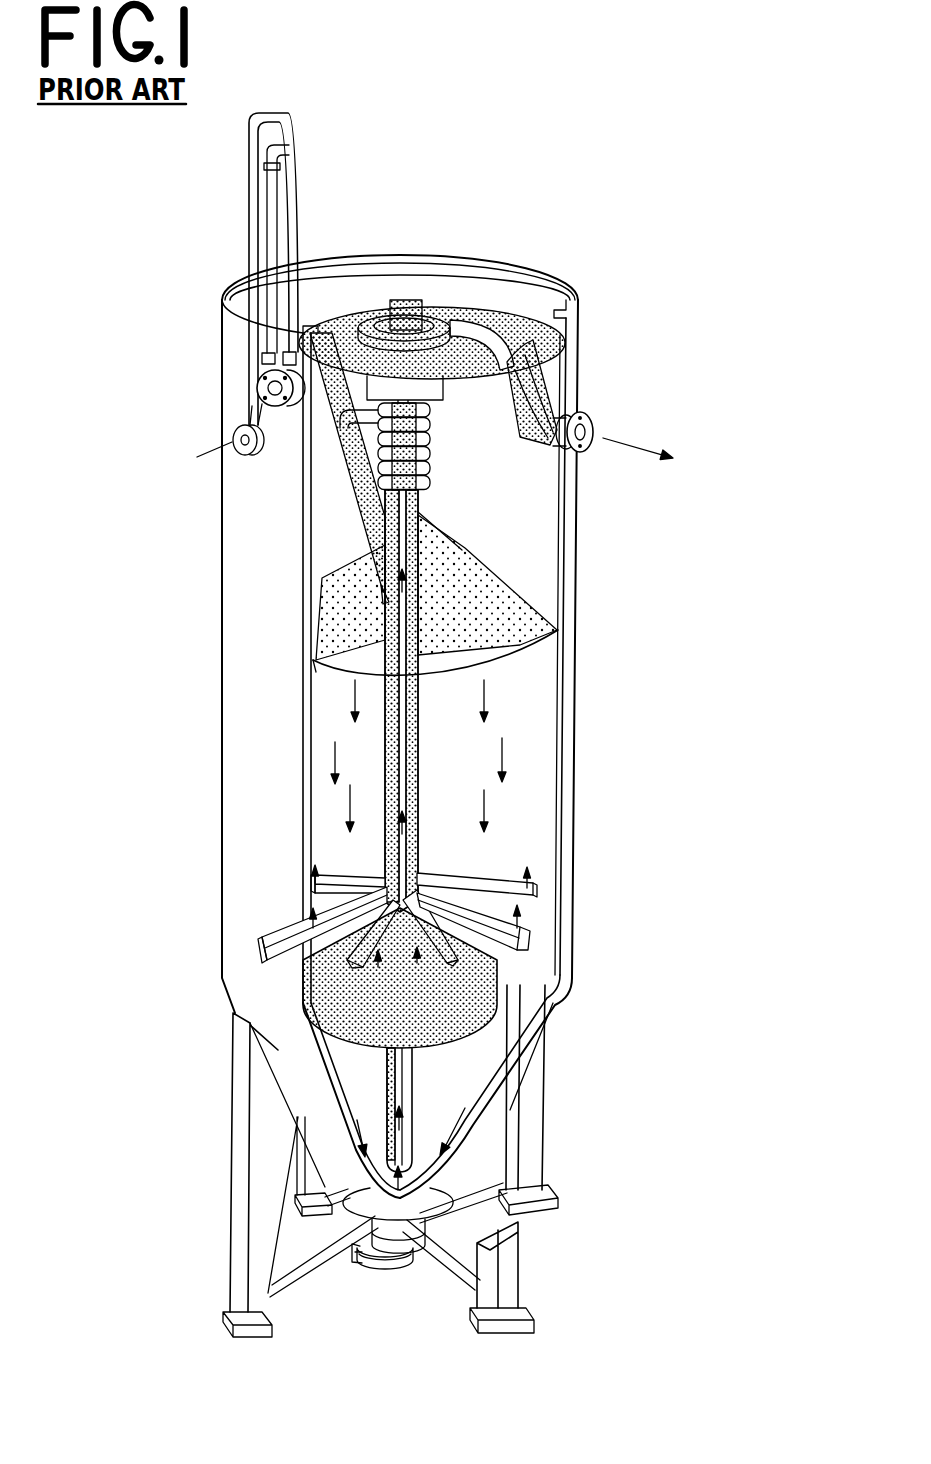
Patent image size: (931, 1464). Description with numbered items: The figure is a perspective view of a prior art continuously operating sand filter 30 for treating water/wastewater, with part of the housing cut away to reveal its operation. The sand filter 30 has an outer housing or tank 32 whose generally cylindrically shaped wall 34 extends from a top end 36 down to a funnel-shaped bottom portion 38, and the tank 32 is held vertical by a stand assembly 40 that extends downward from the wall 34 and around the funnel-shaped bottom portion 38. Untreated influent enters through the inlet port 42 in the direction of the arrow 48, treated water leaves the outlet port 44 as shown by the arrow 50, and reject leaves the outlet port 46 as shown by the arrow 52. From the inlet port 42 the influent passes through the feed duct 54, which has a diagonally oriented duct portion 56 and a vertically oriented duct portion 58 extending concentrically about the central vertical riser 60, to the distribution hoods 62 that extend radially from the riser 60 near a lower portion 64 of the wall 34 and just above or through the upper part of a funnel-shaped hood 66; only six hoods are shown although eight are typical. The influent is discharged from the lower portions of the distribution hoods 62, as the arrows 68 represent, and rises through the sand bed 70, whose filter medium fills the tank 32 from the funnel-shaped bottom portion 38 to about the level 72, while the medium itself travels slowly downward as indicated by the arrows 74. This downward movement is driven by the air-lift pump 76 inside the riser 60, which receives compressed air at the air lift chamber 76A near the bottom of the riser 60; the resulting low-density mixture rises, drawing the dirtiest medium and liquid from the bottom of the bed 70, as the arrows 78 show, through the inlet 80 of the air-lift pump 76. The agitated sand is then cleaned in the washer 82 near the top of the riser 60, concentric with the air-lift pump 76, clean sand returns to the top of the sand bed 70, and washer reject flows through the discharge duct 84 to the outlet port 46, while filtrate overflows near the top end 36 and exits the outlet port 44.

The sand filter 30 is at (437, 215).
The outer housing or tank 32 is at (237, 555).
The outer cylindrically shaped wall 34 is at (222, 813).
The top end 36 is at (520, 262).
The funnel-shaped bottom portion 38 is at (278, 1050).
The stand assembly 40 is at (556, 1239).
The inlet port 42 is at (259, 378).
The outlet port 44 is at (584, 416).
The outlet port 46 is at (236, 452).
The arrow 48 is at (255, 397).
The arrow 50 is at (603, 438).
The arrow 52 is at (181, 449).
The inlet or feed duct 54 is at (331, 513).
The diagonally oriented duct portion 56 is at (337, 457).
The vertically oriented duct portion 58 is at (387, 605).
The central vertical riser 60 is at (441, 608).
The distribution hoods 62 is at (320, 977).
The lower portion of the wall 64 is at (233, 980).
The funnel-shaped hood 66 is at (453, 1040).
The arrows 68 is at (310, 868).
The sand bed 70 is at (330, 678).
The level 72 is at (479, 533).
The arrows 74 is at (357, 705).
The air-lift pump 76 is at (376, 638).
The air lift chamber 76A is at (420, 1160).
The arrows 78 is at (420, 597).
The inlet 80 is at (402, 1182).
The washer 82 is at (433, 460).
The discharge duct 84 is at (357, 410).